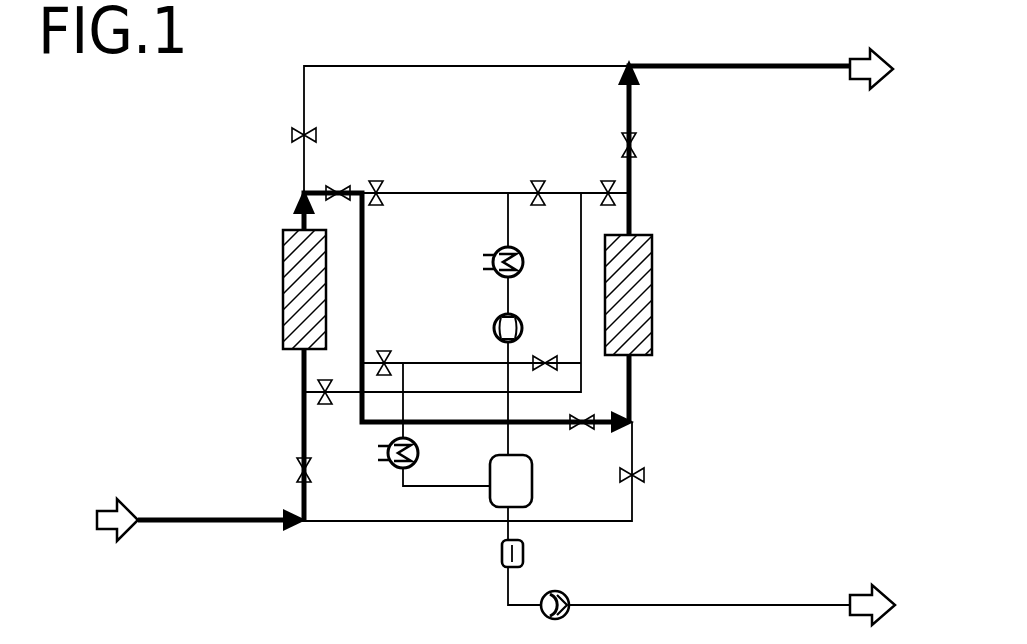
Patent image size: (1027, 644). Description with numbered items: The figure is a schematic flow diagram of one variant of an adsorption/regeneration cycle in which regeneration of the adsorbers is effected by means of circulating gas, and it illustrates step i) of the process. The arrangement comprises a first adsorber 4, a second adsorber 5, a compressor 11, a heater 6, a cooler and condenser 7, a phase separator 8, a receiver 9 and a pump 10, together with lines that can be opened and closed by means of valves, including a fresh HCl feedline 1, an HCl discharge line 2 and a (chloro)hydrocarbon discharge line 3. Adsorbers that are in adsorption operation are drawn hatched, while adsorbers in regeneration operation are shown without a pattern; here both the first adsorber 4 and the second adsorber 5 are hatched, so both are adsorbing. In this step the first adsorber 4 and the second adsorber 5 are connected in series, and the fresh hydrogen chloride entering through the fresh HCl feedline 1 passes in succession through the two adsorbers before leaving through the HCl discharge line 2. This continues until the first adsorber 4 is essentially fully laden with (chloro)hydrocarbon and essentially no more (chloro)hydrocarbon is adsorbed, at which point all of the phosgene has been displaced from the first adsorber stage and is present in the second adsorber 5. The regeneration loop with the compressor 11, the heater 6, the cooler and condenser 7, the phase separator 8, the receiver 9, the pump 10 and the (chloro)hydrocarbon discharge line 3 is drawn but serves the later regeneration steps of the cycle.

The fresh HCl feedline 1 is at (111, 520).
The HCl discharge line 2 is at (881, 69).
The (chloro)hydrocarbon discharge line 3 is at (882, 605).
The first adsorber 4 is at (366, 294).
The second adsorber 5 is at (693, 299).
The heater 6 is at (515, 263).
The cooler and condenser 7 is at (407, 455).
The phase separator 8 is at (522, 481).
The receiver 9 is at (525, 557).
The pump 10 is at (570, 596).
The compressor 11 is at (530, 331).